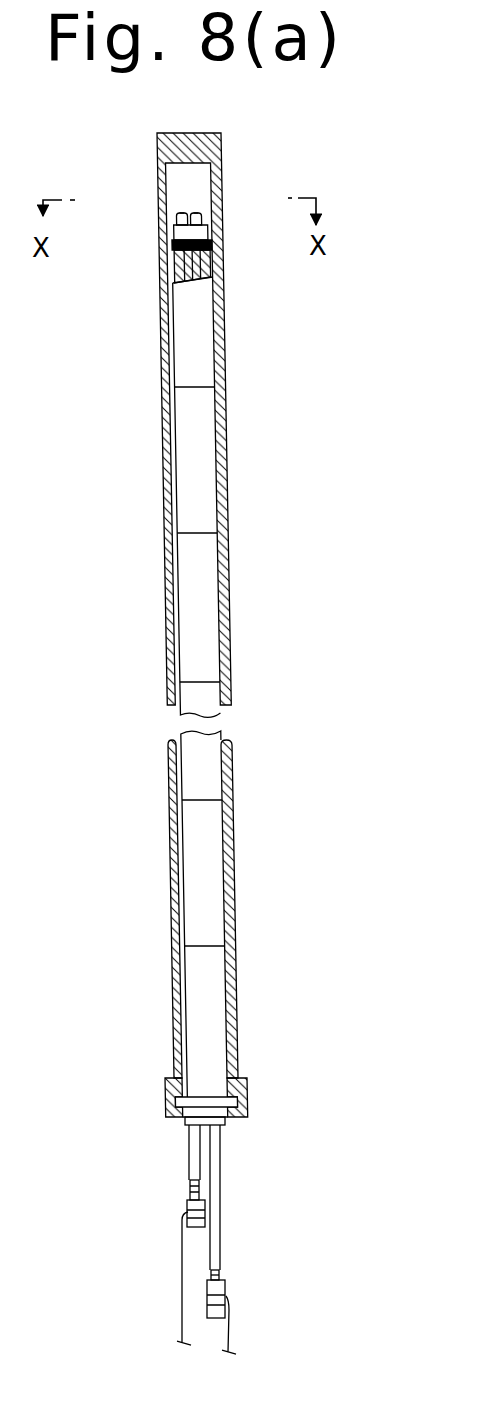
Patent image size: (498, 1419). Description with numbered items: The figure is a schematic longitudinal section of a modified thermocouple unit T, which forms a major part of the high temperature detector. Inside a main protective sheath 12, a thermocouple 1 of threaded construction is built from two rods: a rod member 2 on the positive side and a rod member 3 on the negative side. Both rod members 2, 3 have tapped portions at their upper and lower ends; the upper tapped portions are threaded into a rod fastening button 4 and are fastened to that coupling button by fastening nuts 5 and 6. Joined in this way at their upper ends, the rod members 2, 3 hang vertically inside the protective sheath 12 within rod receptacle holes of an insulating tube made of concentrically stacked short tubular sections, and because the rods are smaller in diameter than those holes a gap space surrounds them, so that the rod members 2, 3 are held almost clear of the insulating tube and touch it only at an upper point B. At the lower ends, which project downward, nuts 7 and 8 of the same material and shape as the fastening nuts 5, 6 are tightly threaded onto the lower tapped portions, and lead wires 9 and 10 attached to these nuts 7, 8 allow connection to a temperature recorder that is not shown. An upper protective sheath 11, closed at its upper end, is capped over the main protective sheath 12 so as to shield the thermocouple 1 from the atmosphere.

The thermocouple 1 is at (180, 192).
The rod member on the positive side 2 is at (181, 212).
The rod member on the negative side 3 is at (193, 212).
The rod fastening button 4 is at (172, 236).
The fastening nut 5 is at (175, 224).
The fastening nut 6 is at (203, 224).
The upper point B is at (208, 243).
The nut 7 is at (187, 1205).
The nut 8 is at (225, 1290).
The lead wire 9 is at (182, 1300).
The lead wire 10 is at (229, 1325).
The upper protective sheath 11 is at (179, 333).
The protective sheath 12 is at (163, 463).
The thermocouple unit T is at (190, 736).